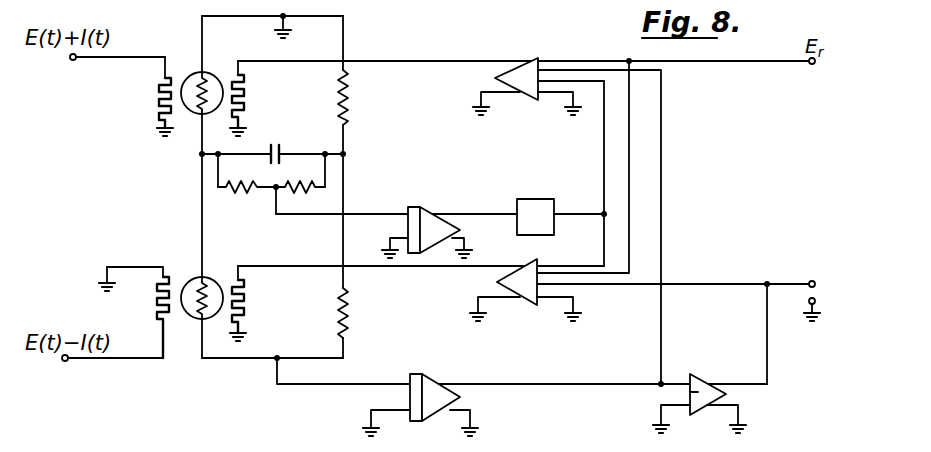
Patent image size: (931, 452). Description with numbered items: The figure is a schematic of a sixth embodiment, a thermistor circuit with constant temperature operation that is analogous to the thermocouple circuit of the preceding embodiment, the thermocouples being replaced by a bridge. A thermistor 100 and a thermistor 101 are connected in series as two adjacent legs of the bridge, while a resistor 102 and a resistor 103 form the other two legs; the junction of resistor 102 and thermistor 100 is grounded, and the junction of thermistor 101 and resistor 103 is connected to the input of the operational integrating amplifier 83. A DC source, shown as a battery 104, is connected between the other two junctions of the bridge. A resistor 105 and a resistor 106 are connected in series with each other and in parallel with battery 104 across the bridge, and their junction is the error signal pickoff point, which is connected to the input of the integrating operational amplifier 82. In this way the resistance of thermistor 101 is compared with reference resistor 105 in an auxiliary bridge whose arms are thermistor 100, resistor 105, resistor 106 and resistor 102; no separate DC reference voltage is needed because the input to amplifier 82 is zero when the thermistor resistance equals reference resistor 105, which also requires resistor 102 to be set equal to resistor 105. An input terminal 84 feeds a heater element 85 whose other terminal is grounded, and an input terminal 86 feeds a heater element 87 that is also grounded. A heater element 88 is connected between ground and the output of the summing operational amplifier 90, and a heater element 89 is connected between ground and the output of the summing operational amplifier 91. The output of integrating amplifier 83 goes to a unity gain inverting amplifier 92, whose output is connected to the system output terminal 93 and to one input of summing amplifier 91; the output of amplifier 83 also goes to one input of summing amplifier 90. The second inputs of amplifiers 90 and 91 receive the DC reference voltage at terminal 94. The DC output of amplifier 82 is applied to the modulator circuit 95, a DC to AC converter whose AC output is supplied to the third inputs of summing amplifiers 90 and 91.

The integrating operational amplifier 82 is at (420, 207).
The operational integrating amplifier 83 is at (433, 374).
The input terminal 84 is at (71, 60).
The heater element 85 is at (160, 98).
The input terminal 86 is at (63, 361).
The heater element 87 is at (157, 300).
The heater element 88 is at (245, 110).
The heater element 89 is at (246, 310).
The summing operational amplifier 90 is at (535, 58).
The summing operational amplifier 91 is at (522, 305).
The unity gain inverting amplifier 92 is at (690, 374).
The system output terminal 93 is at (810, 280).
The terminal 94 is at (811, 64).
The modulator circuit 95 is at (520, 199).
The thermistor 100 is at (195, 72).
The thermistor 101 is at (186, 283).
The resistor 102 is at (348, 92).
The resistor 103 is at (348, 306).
The battery 104 is at (280, 146).
The resistor 105 is at (234, 192).
The resistor 106 is at (291, 191).